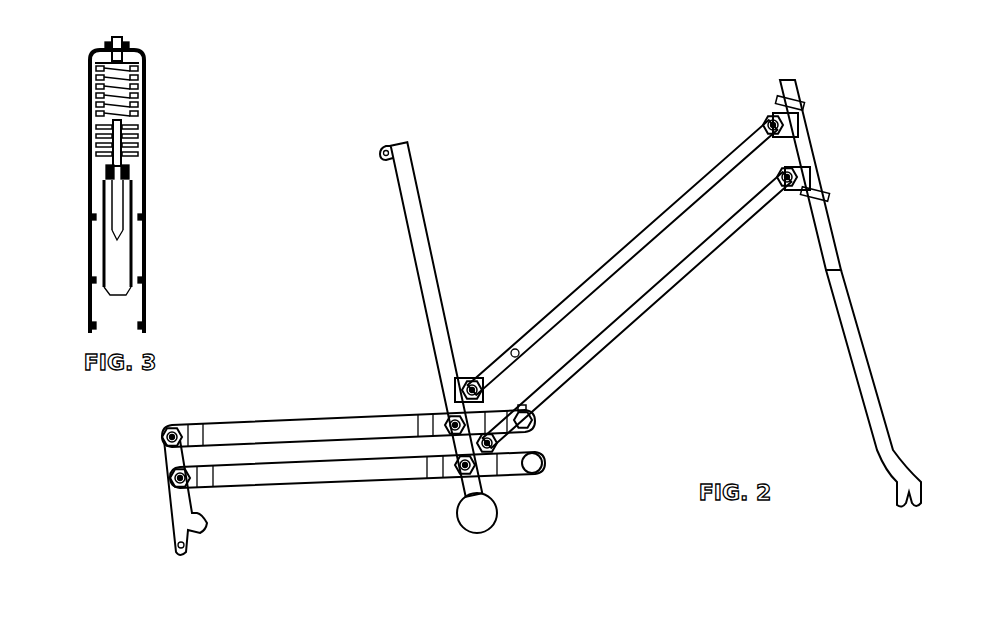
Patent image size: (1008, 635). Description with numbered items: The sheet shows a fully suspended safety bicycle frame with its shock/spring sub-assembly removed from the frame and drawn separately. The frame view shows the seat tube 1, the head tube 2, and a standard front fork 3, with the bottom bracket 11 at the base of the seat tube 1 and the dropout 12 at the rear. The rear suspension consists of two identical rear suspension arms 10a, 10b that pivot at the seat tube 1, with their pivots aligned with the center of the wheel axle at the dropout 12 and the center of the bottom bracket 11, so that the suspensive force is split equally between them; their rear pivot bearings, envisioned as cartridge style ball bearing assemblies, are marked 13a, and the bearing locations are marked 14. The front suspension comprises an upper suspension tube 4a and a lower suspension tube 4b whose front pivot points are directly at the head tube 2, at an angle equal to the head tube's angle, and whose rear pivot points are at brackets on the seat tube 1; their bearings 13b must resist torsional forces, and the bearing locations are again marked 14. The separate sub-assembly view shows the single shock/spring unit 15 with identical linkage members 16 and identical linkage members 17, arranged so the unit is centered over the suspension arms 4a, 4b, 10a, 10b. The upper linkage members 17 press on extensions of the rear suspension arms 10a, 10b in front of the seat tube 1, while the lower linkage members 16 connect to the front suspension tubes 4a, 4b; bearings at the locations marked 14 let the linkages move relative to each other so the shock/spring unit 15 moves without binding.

In FIG. 2, the seat tube 1 is at (418, 252).
In FIG. 2, the head tube 2 is at (812, 150).
In FIG. 2, the front fork 3 is at (847, 310).
In FIG. 2, the upper suspension tube 4a is at (630, 250).
In FIG. 2, the lower suspension tube 4b is at (680, 280).
In FIG. 2, the rear suspension arm 10a is at (300, 419).
In FIG. 2, the rear suspension arm 10b is at (310, 482).
In FIG. 2, the bottom bracket 11 is at (477, 534).
In FIG. 2, the dropout 12 is at (175, 505).
In FIG. 2, the rear pivot bearing 13a is at (170, 478).
In FIG. 2, the front suspension bearing 13b is at (472, 380).
In FIG. 3, the bearing location 14 is at (122, 40).
In FIG. 2, the bearing location 14 is at (515, 349).
In FIG. 3, the shock/spring unit 15 is at (95, 102).
In FIG. 3, the linkage member 16 is at (118, 221).
In FIG. 3, the linkage member 17 is at (88, 167).